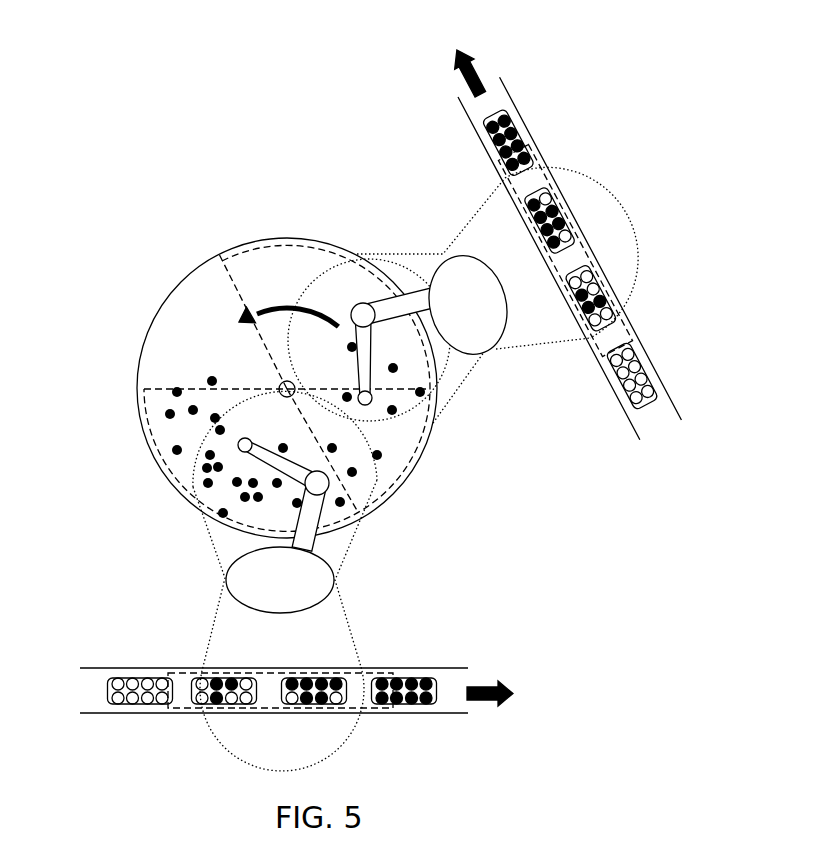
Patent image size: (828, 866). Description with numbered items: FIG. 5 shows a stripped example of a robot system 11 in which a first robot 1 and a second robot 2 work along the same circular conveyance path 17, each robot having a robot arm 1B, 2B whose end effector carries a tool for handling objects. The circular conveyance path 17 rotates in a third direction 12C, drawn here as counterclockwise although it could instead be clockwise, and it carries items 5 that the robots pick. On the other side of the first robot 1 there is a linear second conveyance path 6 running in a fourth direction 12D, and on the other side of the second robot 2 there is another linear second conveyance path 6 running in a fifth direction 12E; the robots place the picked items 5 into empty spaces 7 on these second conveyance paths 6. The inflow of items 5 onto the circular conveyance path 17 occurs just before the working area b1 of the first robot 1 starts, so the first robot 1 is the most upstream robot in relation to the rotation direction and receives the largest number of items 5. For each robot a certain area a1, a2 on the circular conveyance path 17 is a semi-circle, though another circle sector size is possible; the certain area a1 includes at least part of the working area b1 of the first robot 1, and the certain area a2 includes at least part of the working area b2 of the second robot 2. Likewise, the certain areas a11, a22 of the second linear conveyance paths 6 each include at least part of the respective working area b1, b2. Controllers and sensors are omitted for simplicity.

The robot system 11 is at (110, 177).
The circular conveyance path 17 is at (160, 300).
The items 5 is at (208, 378).
The second conveyance path 6 is at (472, 123).
The empty place 7 is at (563, 238).
The first robot 1 is at (287, 591).
The second robot 2 is at (475, 316).
The robot arm 1B is at (322, 538).
The robot arm 2B is at (418, 287).
The third direction 12C is at (267, 313).
The fourth direction 12D is at (490, 697).
The fifth direction 12E is at (470, 49).
The certain area a1 is at (144, 425).
The certain area a2 is at (222, 252).
The working area b1 is at (178, 488).
The working area b2 is at (340, 256).
The certain area a11 is at (168, 674).
The certain area a22 is at (605, 365).